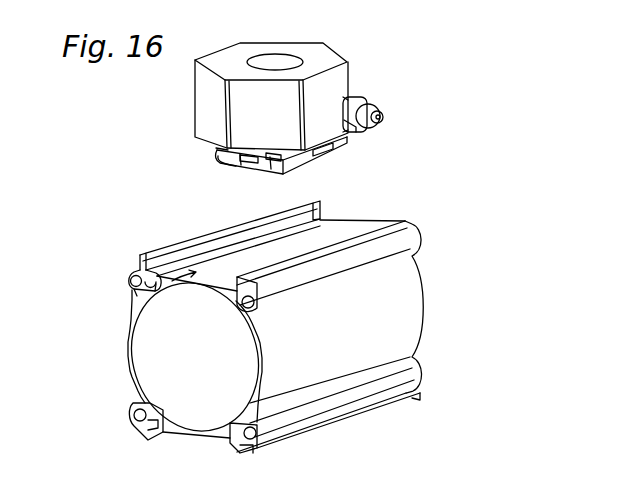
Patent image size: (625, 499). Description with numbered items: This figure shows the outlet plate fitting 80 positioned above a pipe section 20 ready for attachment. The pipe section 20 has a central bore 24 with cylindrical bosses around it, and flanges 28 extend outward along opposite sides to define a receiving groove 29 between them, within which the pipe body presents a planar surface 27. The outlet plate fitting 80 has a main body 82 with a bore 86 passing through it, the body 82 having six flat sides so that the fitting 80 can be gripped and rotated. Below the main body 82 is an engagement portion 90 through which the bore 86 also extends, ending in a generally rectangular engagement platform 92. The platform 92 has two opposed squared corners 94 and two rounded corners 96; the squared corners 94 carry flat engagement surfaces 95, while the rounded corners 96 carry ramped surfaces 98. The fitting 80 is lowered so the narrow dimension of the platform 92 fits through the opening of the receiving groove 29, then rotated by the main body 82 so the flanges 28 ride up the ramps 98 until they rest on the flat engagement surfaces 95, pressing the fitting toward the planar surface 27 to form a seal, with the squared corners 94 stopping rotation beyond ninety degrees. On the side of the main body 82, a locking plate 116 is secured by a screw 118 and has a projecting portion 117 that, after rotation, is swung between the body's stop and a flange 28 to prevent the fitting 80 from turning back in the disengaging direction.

The pipe section 20 is at (438, 351).
The bore 24 is at (203, 425).
The planar surface 27 is at (350, 222).
The flanges 28 is at (140, 256).
The receiving groove 29 is at (131, 282).
The outlet plate fitting 80 is at (356, 34).
The main body 82 is at (348, 68).
The bore 86 is at (284, 60).
The engagement portion 90 is at (313, 174).
The engagement platform 92 is at (314, 157).
The squared corners 94 is at (273, 170).
The flat engagement surfaces 95 is at (254, 166).
The rounded corners 96 is at (216, 157).
The ramped surfaces 98 is at (215, 150).
The locking plate 116 is at (371, 98).
The projecting portion 117 is at (356, 128).
The screw 118 is at (385, 117).